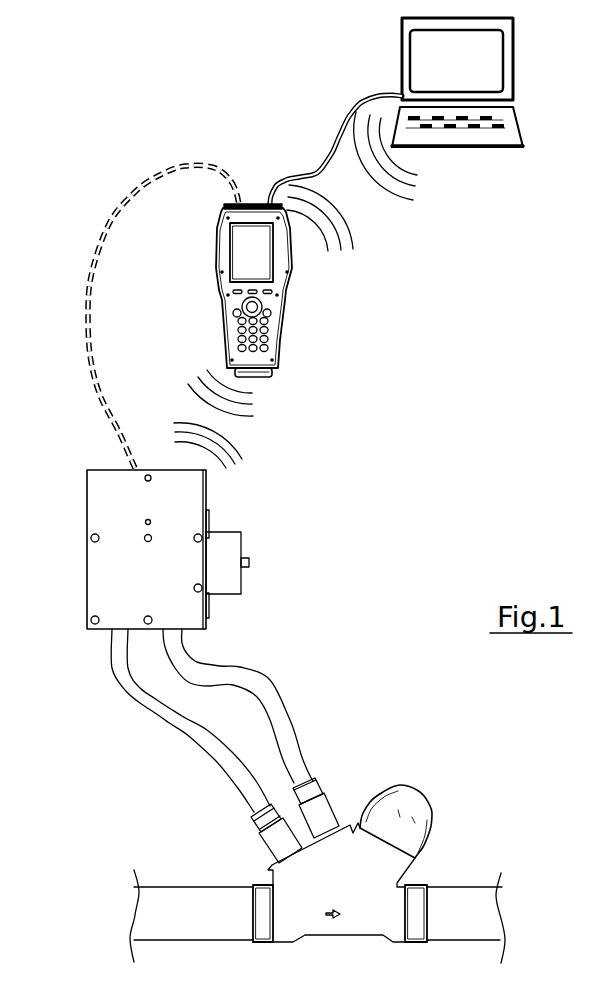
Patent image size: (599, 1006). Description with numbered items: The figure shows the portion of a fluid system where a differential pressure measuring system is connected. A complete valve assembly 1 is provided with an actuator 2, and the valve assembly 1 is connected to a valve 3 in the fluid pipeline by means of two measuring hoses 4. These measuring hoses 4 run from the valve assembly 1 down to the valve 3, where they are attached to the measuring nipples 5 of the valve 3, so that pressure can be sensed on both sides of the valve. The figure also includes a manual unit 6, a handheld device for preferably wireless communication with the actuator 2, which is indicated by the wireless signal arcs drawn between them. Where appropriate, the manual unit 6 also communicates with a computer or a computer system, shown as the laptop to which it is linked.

The valve assembly 1 is at (80, 506).
The actuator 2 is at (248, 597).
The valve 3 is at (365, 943).
The measuring hoses 4 is at (290, 694).
The measuring nipples 5 is at (249, 839).
The manual unit 6 is at (212, 243).